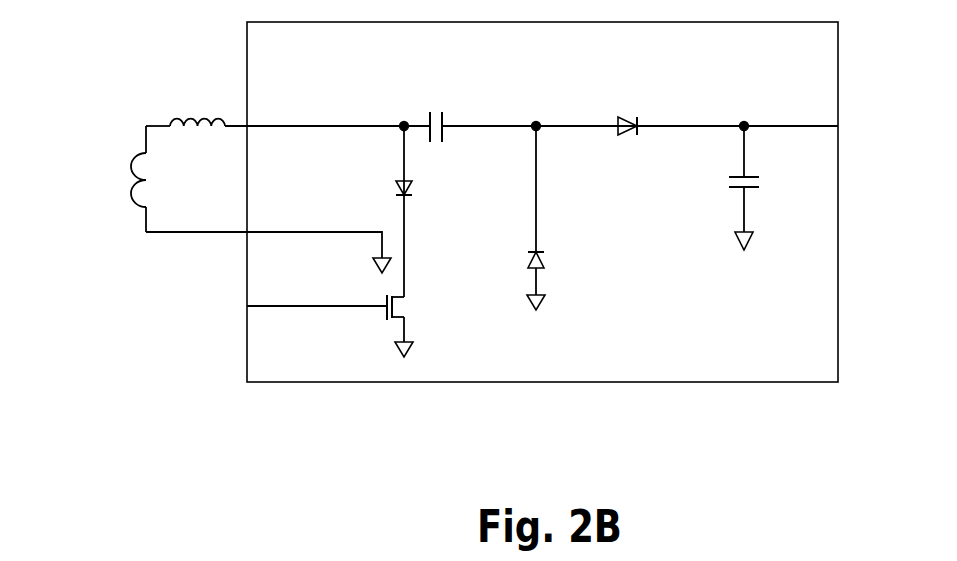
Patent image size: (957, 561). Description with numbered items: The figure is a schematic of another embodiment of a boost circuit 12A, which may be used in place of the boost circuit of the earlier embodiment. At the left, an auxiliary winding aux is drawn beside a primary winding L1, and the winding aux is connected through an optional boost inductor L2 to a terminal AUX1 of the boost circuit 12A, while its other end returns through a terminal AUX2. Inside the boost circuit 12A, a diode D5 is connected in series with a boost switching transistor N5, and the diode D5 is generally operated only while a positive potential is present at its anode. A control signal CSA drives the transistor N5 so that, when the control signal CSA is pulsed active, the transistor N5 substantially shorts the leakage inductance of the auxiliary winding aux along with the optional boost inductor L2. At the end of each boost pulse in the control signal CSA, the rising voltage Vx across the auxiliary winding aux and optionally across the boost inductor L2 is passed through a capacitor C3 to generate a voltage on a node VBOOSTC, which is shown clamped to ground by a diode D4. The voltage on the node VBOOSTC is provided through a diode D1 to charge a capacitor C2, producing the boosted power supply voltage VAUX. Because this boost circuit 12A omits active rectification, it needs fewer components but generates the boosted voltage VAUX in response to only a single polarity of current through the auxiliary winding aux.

The boost circuit 12A is at (440, 57).
The primary inductor winding L1 is at (100, 179).
The boost inductor L2 is at (185, 102).
The auxiliary winding aux is at (183, 180).
The auxiliary terminal 1 AUX1 is at (280, 100).
The auxiliary terminal 2 AUX2 is at (268, 233).
The rising voltage Vx is at (346, 104).
The capacitor C3 is at (436, 113).
The diode D5 is at (424, 211).
The boost switching transistor N5 is at (416, 326).
The control signal CSA is at (292, 306).
The node VBOOSTC is at (530, 97).
The diode D4 is at (554, 218).
The diode D1 is at (631, 110).
The capacitor C2 is at (759, 188).
The boosted power supply voltage VAUX is at (870, 124).